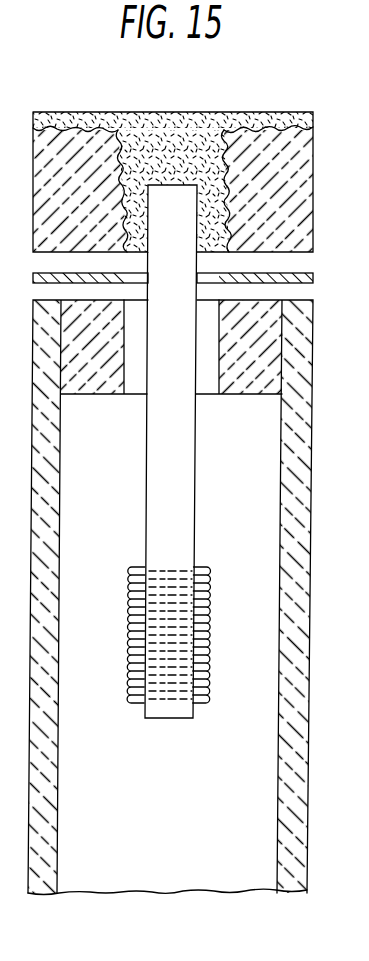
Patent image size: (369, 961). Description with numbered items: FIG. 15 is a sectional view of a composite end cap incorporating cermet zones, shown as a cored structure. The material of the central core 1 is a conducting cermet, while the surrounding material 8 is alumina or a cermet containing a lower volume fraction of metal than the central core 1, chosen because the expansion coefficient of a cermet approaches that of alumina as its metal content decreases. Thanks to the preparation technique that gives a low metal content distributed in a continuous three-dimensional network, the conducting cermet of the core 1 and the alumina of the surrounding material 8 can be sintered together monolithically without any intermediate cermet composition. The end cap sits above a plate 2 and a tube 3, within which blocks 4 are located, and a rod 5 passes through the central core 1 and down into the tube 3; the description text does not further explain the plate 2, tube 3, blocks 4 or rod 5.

The central core 1 is at (222, 209).
The surrounding material 8 is at (313, 230).
The plate 2 is at (313, 278).
The tube housing 3 is at (302, 346).
The support block 4 is at (248, 389).
The rod 5 is at (152, 473).